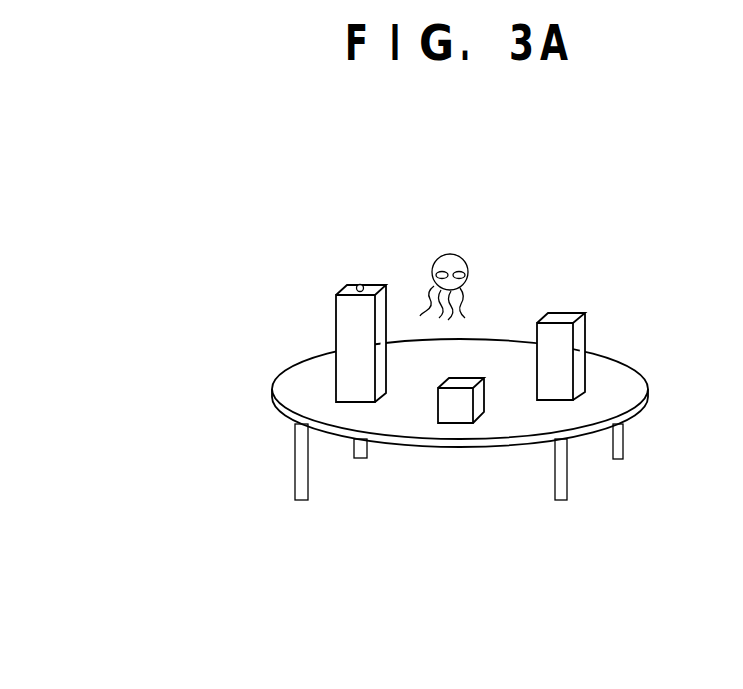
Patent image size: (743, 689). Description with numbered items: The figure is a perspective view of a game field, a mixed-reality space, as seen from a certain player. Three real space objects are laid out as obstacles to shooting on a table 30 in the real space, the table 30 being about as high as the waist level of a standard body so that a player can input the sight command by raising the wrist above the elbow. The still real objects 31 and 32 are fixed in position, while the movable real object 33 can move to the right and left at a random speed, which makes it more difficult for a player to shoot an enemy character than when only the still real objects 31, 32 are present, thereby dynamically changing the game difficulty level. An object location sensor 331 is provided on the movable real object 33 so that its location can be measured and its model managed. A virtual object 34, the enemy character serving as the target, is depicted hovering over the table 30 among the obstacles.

The table 30 is at (632, 412).
The still real object 31 is at (562, 316).
The still real object 32 is at (459, 413).
The movable real object 33 is at (347, 320).
The object location sensor 331 is at (360, 284).
The virtual object (target) 34 is at (460, 254).